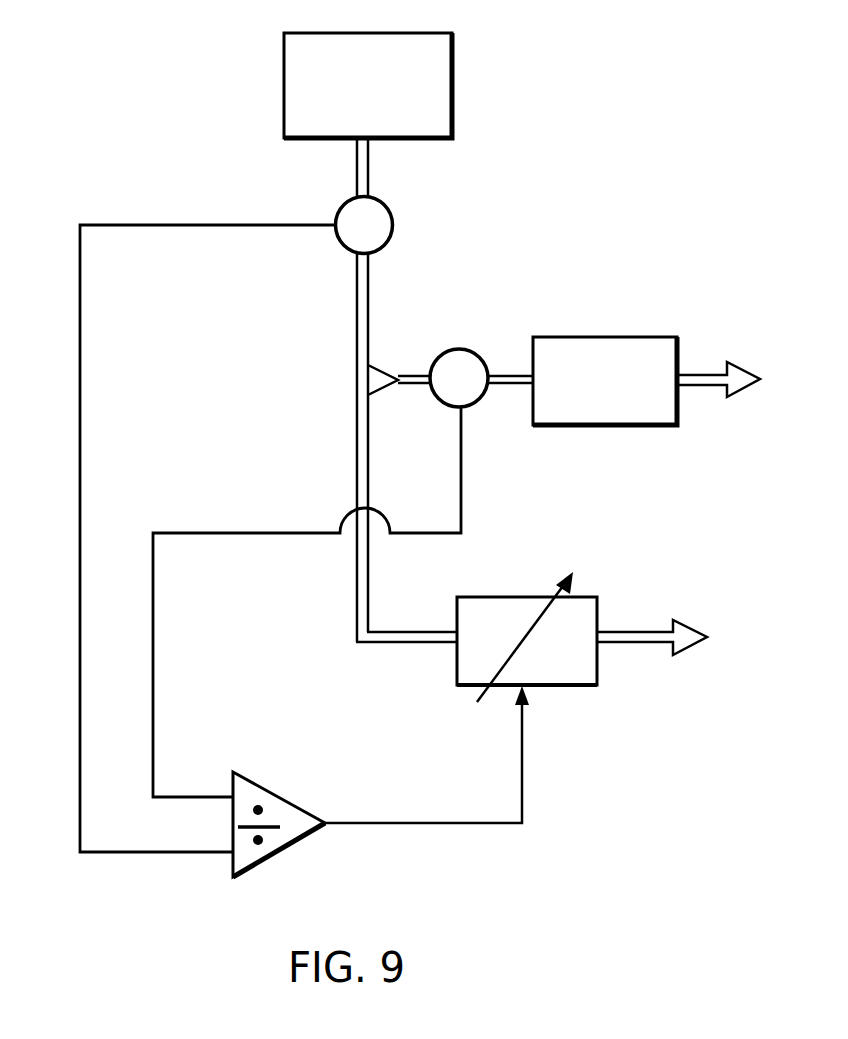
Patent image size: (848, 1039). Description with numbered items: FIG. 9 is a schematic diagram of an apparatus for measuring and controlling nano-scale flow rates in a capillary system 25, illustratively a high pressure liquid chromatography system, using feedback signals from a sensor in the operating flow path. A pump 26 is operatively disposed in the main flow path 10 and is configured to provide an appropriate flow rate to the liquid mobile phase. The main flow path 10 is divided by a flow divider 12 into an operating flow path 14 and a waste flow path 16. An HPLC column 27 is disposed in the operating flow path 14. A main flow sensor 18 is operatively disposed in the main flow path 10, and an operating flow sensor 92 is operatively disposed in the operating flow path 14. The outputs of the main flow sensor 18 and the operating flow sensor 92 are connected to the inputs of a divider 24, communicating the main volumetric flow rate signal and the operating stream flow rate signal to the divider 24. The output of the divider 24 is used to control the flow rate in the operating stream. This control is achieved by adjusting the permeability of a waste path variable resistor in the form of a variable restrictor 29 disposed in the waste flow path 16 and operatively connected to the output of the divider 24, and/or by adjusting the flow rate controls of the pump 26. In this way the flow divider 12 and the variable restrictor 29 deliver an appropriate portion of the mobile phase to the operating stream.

The capillary system 25 is at (95, 130).
The pump 26 is at (452, 95).
The main flow sensor 18 is at (388, 213).
The main flow path 10 is at (357, 300).
The flow divider 12 is at (372, 367).
The operating flow sensor 92 is at (486, 356).
The operating flow path 14 is at (510, 386).
The HPLC column 27 is at (657, 337).
The waste flow path 16 is at (416, 645).
The variable restrictor 29 is at (573, 687).
The divider 24 is at (267, 790).